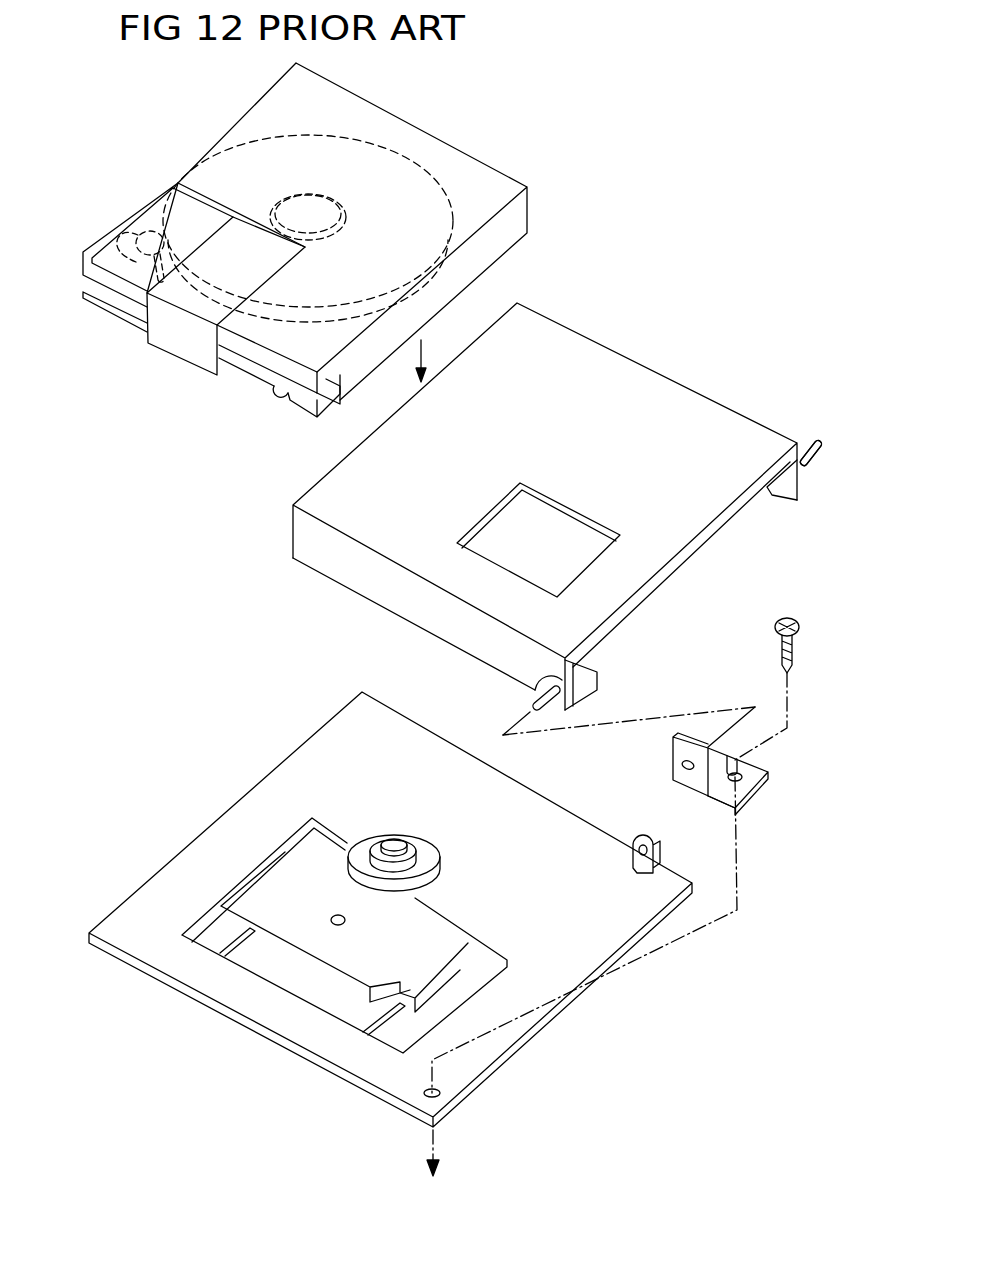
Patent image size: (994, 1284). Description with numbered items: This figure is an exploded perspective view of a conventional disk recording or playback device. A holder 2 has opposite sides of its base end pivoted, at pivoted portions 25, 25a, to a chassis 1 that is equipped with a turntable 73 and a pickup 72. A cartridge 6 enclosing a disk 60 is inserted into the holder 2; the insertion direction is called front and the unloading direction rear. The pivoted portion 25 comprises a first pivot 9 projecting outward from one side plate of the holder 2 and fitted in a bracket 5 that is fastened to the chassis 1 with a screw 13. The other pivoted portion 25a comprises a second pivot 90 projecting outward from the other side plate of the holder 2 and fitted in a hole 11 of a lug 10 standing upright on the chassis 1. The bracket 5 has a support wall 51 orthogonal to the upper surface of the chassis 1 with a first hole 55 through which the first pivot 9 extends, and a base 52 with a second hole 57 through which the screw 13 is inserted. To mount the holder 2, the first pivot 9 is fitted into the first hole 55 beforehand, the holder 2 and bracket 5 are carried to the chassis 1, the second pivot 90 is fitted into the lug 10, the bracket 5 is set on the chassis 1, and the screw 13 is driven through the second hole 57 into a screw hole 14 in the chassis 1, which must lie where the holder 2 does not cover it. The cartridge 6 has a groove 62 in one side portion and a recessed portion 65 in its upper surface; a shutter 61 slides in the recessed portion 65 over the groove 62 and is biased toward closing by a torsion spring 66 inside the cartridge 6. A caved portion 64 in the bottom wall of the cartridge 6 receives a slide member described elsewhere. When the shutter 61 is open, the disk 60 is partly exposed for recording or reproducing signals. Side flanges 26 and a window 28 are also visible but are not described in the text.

The chassis 1 is at (300, 760).
The holder 2 is at (632, 373).
The bracket 5 is at (708, 759).
The cartridge 6 is at (468, 177).
The first pivot 9 is at (570, 678).
The lug 10 is at (641, 830).
The hole 11 is at (637, 870).
The screw 13 is at (768, 626).
The screw hole 14 is at (440, 1090).
The pivoted portion 25 is at (516, 697).
The pivoted portion 25a is at (820, 441).
The side flange 26 is at (355, 582).
The window opening 28 is at (598, 556).
The support wall 51 is at (692, 782).
The base 52 is at (768, 781).
The first hole 55 is at (682, 763).
The second hole 57 is at (735, 748).
The disk 60 is at (387, 148).
The shutter 61 is at (188, 352).
The groove 62 is at (246, 372).
The caved portion 64 is at (278, 398).
The recessed portion 65 is at (110, 215).
The torsion spring 66 is at (143, 230).
The pickup 72 is at (265, 890).
The turntable 73 is at (400, 832).
The second pivot 90 is at (821, 475).